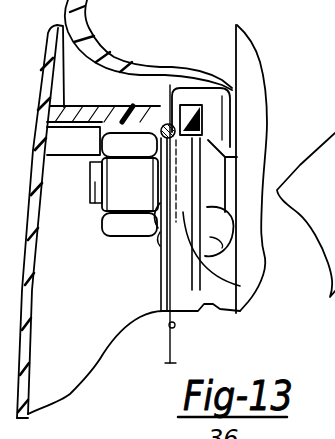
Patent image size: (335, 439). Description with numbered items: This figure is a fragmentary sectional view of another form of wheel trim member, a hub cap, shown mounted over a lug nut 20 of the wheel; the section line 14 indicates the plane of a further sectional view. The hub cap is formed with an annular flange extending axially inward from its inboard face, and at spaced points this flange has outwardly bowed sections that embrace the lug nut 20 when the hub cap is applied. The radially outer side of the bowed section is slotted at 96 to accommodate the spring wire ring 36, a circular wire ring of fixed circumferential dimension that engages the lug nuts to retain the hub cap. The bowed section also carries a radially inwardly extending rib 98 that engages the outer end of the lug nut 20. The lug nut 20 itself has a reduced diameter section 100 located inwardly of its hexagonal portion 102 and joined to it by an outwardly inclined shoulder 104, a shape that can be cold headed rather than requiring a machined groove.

The section line 14- 14 is at (170, 95).
The lug nut 20 is at (222, 172).
The spring wire ring 36 is at (163, 295).
The slot 96 is at (165, 124).
The rib 98 is at (62, 155).
The reduced diameter section 100 is at (245, 303).
The hexagonal portion 102 is at (123, 228).
The outwardly inclined shoulder 104 is at (166, 238).